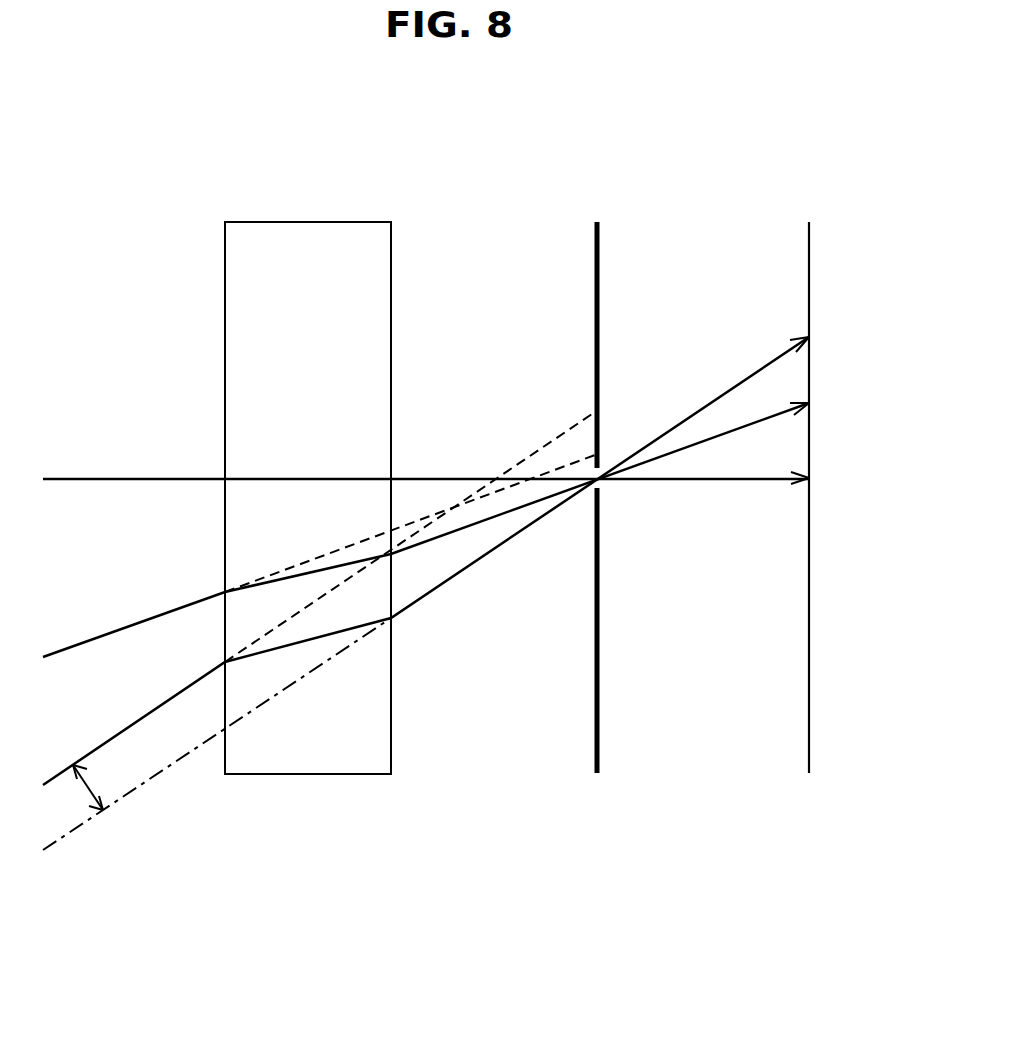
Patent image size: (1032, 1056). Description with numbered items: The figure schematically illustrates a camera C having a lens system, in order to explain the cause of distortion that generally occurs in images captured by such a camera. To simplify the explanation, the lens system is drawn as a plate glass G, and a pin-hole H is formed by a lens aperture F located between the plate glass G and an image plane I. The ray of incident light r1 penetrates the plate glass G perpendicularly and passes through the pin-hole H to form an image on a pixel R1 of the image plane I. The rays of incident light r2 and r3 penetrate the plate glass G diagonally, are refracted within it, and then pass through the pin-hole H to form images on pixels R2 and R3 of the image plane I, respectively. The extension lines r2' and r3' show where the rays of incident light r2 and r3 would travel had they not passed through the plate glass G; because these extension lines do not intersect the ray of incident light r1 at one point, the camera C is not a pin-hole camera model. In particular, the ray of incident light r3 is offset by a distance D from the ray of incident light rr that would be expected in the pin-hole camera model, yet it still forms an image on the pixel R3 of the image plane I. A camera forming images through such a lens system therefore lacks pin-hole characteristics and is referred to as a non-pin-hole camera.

The camera C is at (695, 132).
The plate glass G is at (313, 774).
The lens aperture F is at (596, 742).
The pin-hole H is at (606, 487).
The image plane I is at (810, 742).
The ray of incident light r1 is at (128, 478).
The ray of incident light r2 is at (426, 530).
The ray of incident light r3 is at (426, 561).
The extension line r2' is at (410, 523).
The extension line r3' is at (410, 537).
The ray of incident light rr is at (148, 783).
The distance D is at (95, 785).
The pixel R1 is at (824, 478).
The pixel R2 is at (823, 400).
The pixel R3 is at (823, 335).